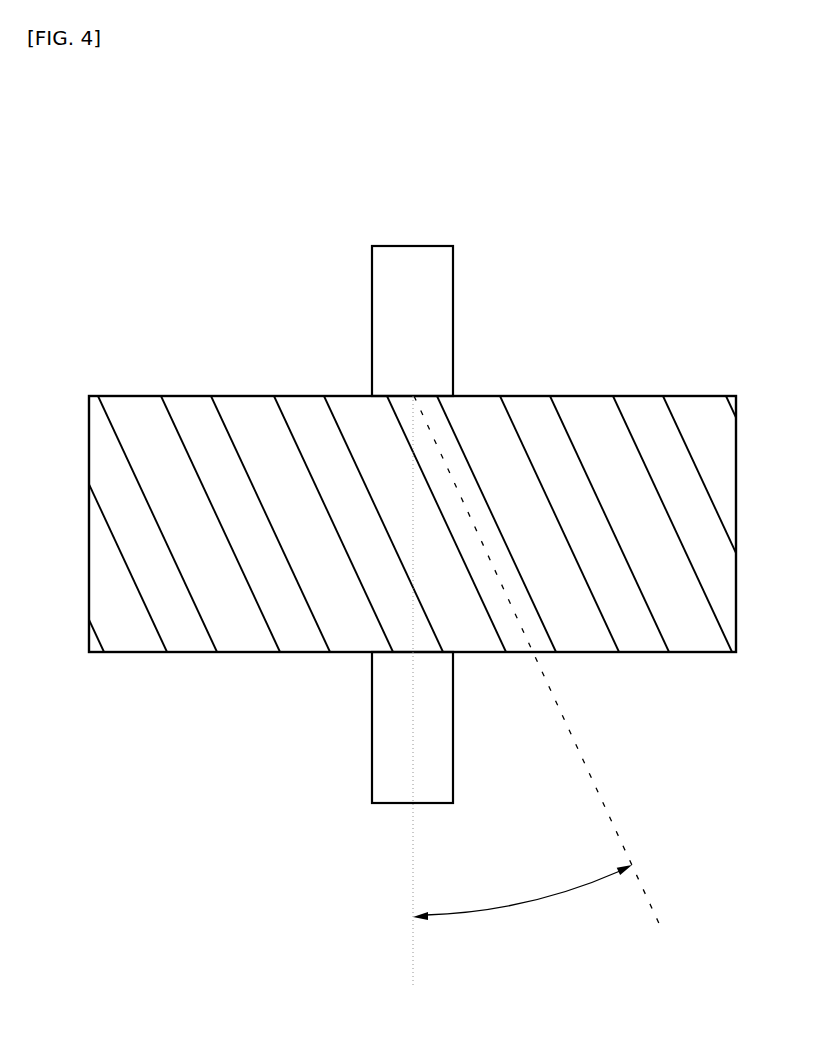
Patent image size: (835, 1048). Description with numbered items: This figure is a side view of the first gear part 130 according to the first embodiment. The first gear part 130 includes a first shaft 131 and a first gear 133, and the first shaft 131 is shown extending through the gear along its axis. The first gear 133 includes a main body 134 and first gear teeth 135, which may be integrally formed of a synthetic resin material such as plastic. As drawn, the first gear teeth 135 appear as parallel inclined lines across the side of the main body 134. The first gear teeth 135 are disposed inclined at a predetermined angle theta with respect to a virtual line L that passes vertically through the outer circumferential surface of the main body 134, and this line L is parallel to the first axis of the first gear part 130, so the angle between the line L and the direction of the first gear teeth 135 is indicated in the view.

The first gear part 130 is at (93, 192).
The first shaft 131 is at (412, 246).
The first gear 133 is at (417, 590).
The main body 134 is at (598, 445).
The first gear teeth 135 is at (453, 458).